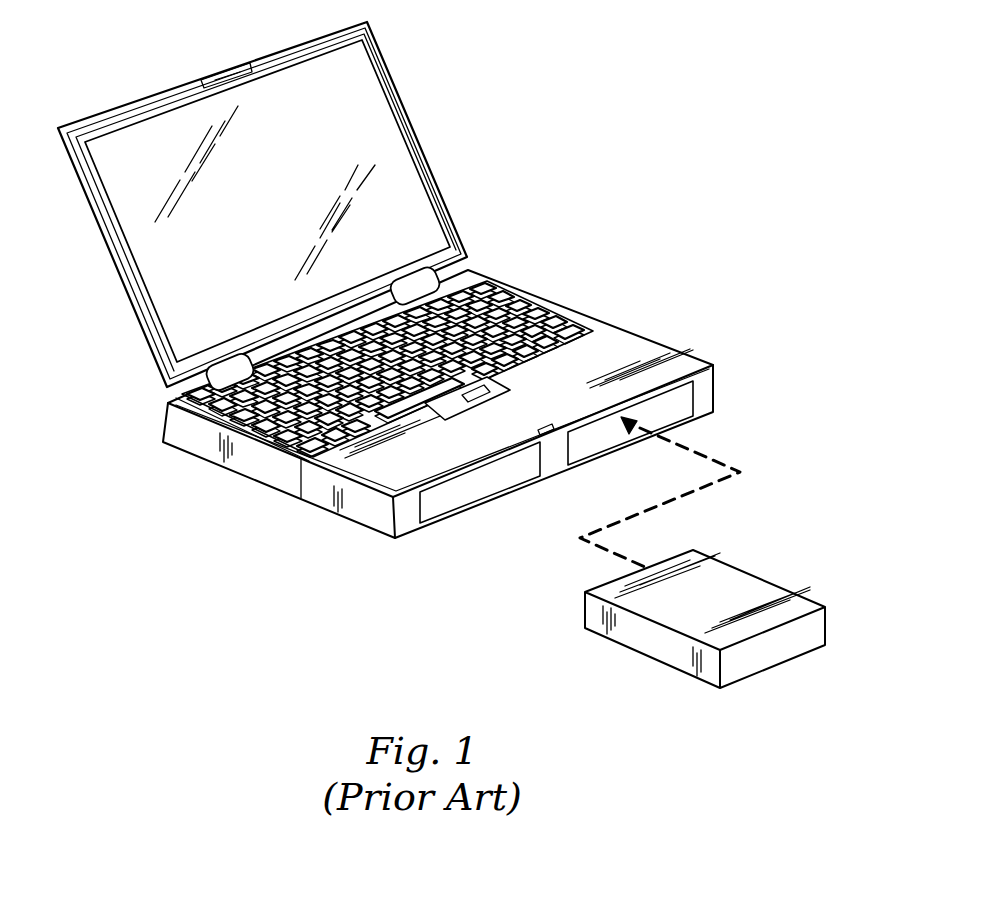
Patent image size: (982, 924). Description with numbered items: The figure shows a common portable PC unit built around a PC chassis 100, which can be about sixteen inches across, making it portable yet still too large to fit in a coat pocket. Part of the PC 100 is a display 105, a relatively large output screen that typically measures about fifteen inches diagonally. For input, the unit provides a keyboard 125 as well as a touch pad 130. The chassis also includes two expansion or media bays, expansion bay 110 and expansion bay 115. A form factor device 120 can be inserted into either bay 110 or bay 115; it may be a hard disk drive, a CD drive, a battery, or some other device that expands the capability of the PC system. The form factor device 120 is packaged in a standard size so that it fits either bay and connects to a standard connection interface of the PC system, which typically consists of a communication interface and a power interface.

The PC chassis 100 is at (200, 442).
The display 105 is at (383, 128).
The expansion bay 110 is at (453, 495).
The expansion bay 115 is at (600, 433).
The form factor device 120 is at (635, 633).
The keyboard 125 is at (550, 324).
The touch pad 130 is at (495, 409).